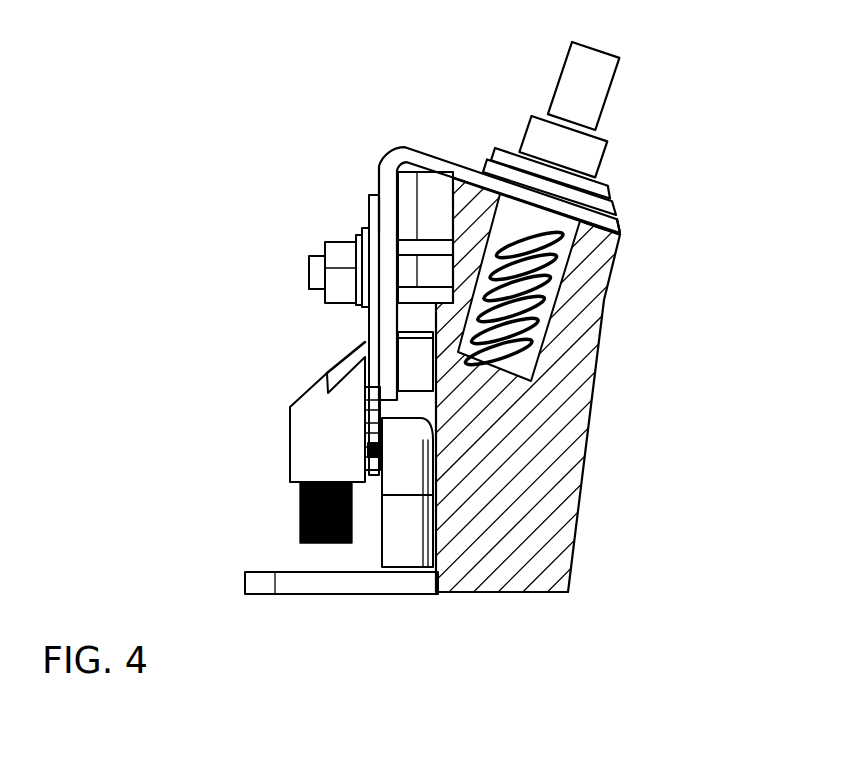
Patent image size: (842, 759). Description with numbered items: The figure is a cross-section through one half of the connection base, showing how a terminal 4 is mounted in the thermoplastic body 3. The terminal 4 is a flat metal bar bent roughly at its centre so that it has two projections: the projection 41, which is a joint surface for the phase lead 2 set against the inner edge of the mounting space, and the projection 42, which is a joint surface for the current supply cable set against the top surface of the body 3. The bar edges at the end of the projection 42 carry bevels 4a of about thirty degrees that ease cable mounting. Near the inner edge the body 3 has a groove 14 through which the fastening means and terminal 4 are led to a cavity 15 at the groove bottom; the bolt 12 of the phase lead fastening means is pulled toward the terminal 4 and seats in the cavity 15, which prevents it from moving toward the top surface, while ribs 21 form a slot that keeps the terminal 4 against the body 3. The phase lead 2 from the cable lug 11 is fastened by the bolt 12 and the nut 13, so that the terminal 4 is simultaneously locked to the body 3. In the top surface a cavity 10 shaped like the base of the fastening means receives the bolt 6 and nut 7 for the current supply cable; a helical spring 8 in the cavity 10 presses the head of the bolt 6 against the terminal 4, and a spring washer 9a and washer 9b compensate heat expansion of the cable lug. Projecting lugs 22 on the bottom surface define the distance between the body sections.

The phase lead 2 is at (300, 517).
The body 3 is at (562, 540).
The terminal 4 is at (437, 153).
The bevel 4a is at (620, 235).
The bolt 6 is at (603, 97).
The nut 7 is at (593, 141).
The spring 8 is at (538, 335).
The spring washer 9a is at (608, 187).
The washer 9b is at (612, 205).
The cavity 10 is at (552, 305).
The cable lug 11 is at (305, 433).
The bolt 12 is at (308, 264).
The nut 13 is at (343, 252).
The groove 14 is at (437, 210).
The cavity 15 is at (405, 298).
The rib 21 is at (368, 215).
The projecting lug 22 is at (267, 579).
The projection 41 is at (377, 205).
The projection 42 is at (594, 232).